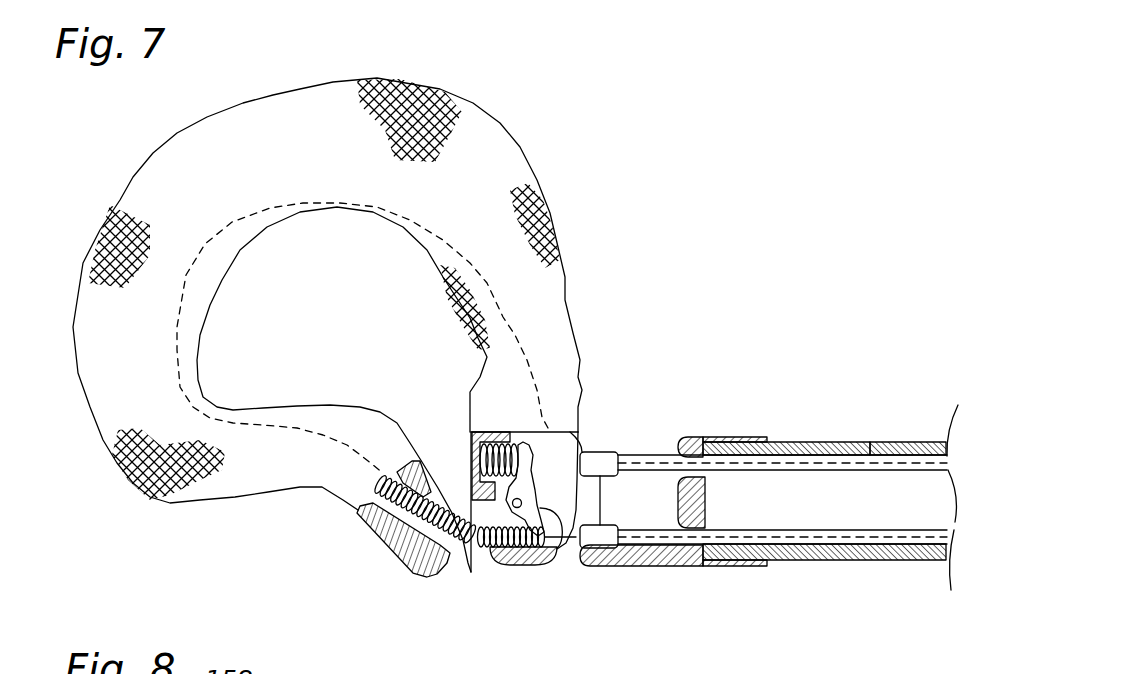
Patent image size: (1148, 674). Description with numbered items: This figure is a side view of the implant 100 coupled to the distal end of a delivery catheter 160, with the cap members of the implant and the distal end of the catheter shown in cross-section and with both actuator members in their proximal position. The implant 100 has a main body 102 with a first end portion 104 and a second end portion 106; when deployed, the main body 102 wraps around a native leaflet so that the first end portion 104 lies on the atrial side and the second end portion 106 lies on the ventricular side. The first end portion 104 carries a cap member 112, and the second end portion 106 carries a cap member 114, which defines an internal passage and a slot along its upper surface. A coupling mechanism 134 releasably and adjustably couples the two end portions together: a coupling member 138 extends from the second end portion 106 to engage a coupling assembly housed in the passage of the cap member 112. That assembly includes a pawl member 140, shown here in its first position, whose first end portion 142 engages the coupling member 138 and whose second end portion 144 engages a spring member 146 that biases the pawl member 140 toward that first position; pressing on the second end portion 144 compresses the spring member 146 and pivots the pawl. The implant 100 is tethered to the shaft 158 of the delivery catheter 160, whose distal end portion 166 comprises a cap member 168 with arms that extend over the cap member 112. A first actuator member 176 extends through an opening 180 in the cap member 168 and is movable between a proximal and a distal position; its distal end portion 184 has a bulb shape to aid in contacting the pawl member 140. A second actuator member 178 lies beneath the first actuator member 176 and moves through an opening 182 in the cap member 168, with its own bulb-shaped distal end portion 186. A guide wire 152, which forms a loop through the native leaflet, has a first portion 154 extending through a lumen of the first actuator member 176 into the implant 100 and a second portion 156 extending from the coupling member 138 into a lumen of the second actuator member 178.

The implant 100 is at (564, 142).
The main body 102 is at (113, 213).
The first end portion 104 is at (597, 410).
The second end portion 106 is at (343, 410).
The cap member 112 is at (510, 566).
The cap member 114 is at (383, 545).
The coupling mechanism 134 is at (564, 368).
The coupling member 138 is at (471, 574).
The pawl member 140 is at (526, 448).
The first end portion 142 is at (560, 550).
The second end portion 144 is at (598, 414).
The spring member 146 is at (479, 450).
The guide wire 152 is at (362, 262).
The first portion 154 is at (778, 462).
The second portion 156 is at (843, 538).
The shaft 158 is at (905, 442).
The delivery catheter 160 is at (835, 442).
The distal end portion 166 is at (800, 252).
The cap member 168 is at (627, 567).
The first actuator member 176 is at (648, 455).
The second actuator member 178 is at (660, 545).
The opening 180 is at (697, 442).
The opening 182 is at (693, 547).
The distal end portion 184 is at (603, 458).
The distal end portion 186 is at (597, 548).